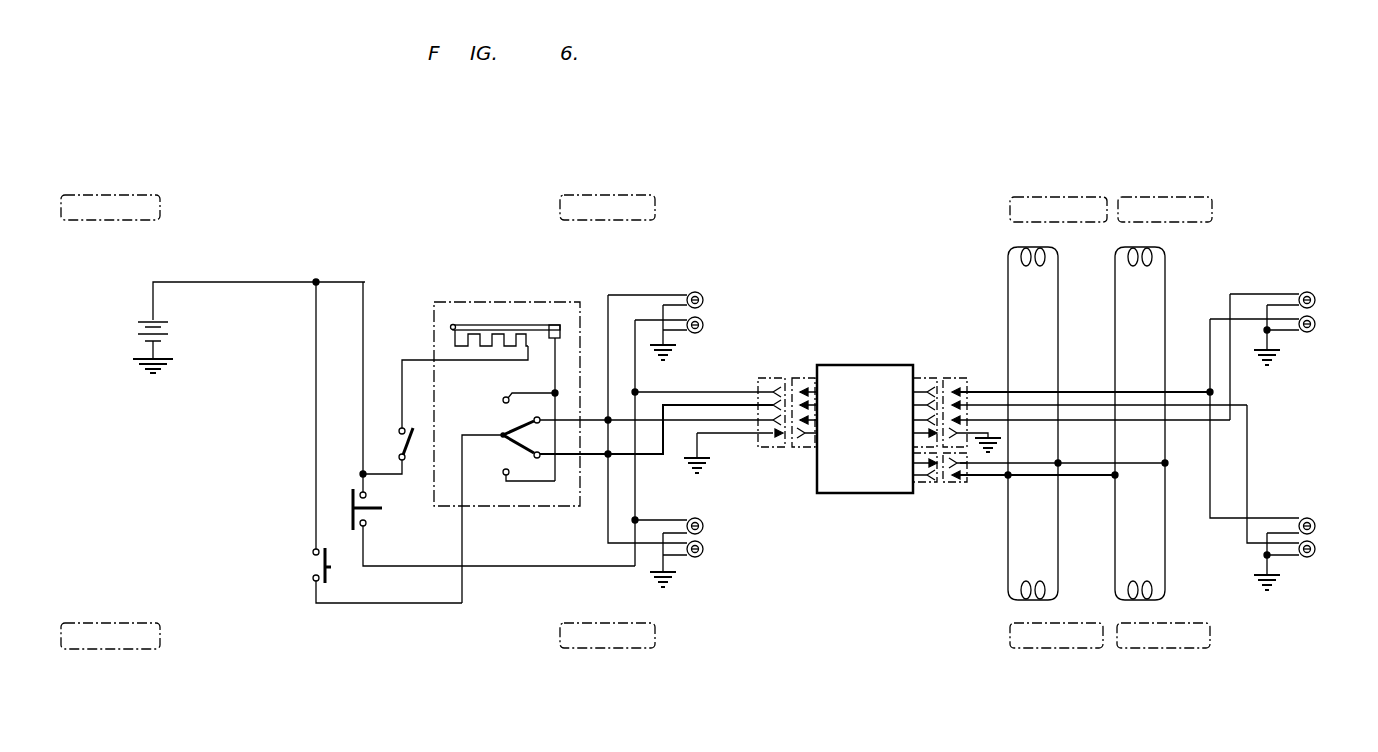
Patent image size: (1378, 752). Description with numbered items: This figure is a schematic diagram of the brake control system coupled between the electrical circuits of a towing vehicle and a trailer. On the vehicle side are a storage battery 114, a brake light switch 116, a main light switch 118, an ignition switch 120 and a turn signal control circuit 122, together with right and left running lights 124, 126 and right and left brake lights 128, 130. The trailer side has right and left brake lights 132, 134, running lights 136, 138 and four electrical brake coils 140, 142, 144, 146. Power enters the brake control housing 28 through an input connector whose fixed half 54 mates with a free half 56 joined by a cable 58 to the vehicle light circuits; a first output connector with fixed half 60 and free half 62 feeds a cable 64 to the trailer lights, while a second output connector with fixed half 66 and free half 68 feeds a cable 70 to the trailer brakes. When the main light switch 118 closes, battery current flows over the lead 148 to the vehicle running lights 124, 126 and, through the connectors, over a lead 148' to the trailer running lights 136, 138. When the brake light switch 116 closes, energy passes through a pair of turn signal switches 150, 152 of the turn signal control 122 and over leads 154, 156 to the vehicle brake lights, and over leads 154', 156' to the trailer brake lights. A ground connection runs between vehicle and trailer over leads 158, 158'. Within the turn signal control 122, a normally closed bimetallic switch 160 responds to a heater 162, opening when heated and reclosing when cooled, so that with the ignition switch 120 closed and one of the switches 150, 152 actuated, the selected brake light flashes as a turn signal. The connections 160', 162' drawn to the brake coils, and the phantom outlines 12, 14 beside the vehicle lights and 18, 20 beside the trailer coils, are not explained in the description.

The first vehicle wheel 12 is at (114, 653).
The second vehicle wheel 14 is at (609, 653).
The third vehicle wheel 18 is at (1056, 651).
The fourth vehicle wheel 20 is at (1169, 651).
The brake control housing 28 is at (869, 364).
The fixed half of input connector 54 is at (808, 372).
The free half of input connector 56 is at (777, 378).
The cable 58 is at (723, 392).
The fixed half of first output connector 60 is at (925, 373).
The free half of first output connector 62 is at (958, 372).
The cable 64 is at (986, 391).
The fixed half of second output connector 66 is at (915, 485).
The free half of second output connector 68 is at (953, 485).
The cable 70 is at (988, 479).
The storage battery 114 is at (168, 327).
The brake light switch 116 is at (326, 579).
The main light switch 118 is at (350, 496).
The ignition switch 120 is at (413, 437).
The turn signal control circuit 122 is at (470, 301).
The right running light 124 is at (705, 325).
The left running light 126 is at (705, 526).
The right brake light 128 is at (705, 296).
The left brake light 130 is at (705, 549).
The right brake light 132 is at (1316, 298).
The left brake light 134 is at (1312, 558).
The running light 136 is at (1313, 331).
The running light 138 is at (1315, 523).
The electrical brake coil 140 is at (1010, 249).
The electrical brake coil 142 is at (1010, 600).
The electrical brake coil 144 is at (1166, 248).
The electrical brake coil 146 is at (1166, 600).
The lead 148 is at (499, 563).
The lead 148' is at (1111, 371).
The right turn signal switch 150 is at (512, 430).
The left turn signal switch 152 is at (514, 450).
The lead 154 is at (656, 436).
The lead 154' is at (1268, 357).
The lead 156 is at (656, 449).
The lead 156' is at (1278, 474).
The ground lead 158 is at (730, 457).
The ground lead 158' is at (1012, 438).
The bimetallic switch 160 is at (529, 392).
The lead wire 160' is at (1062, 493).
The heater 162 is at (473, 335).
The lead wire 162' is at (1062, 448).